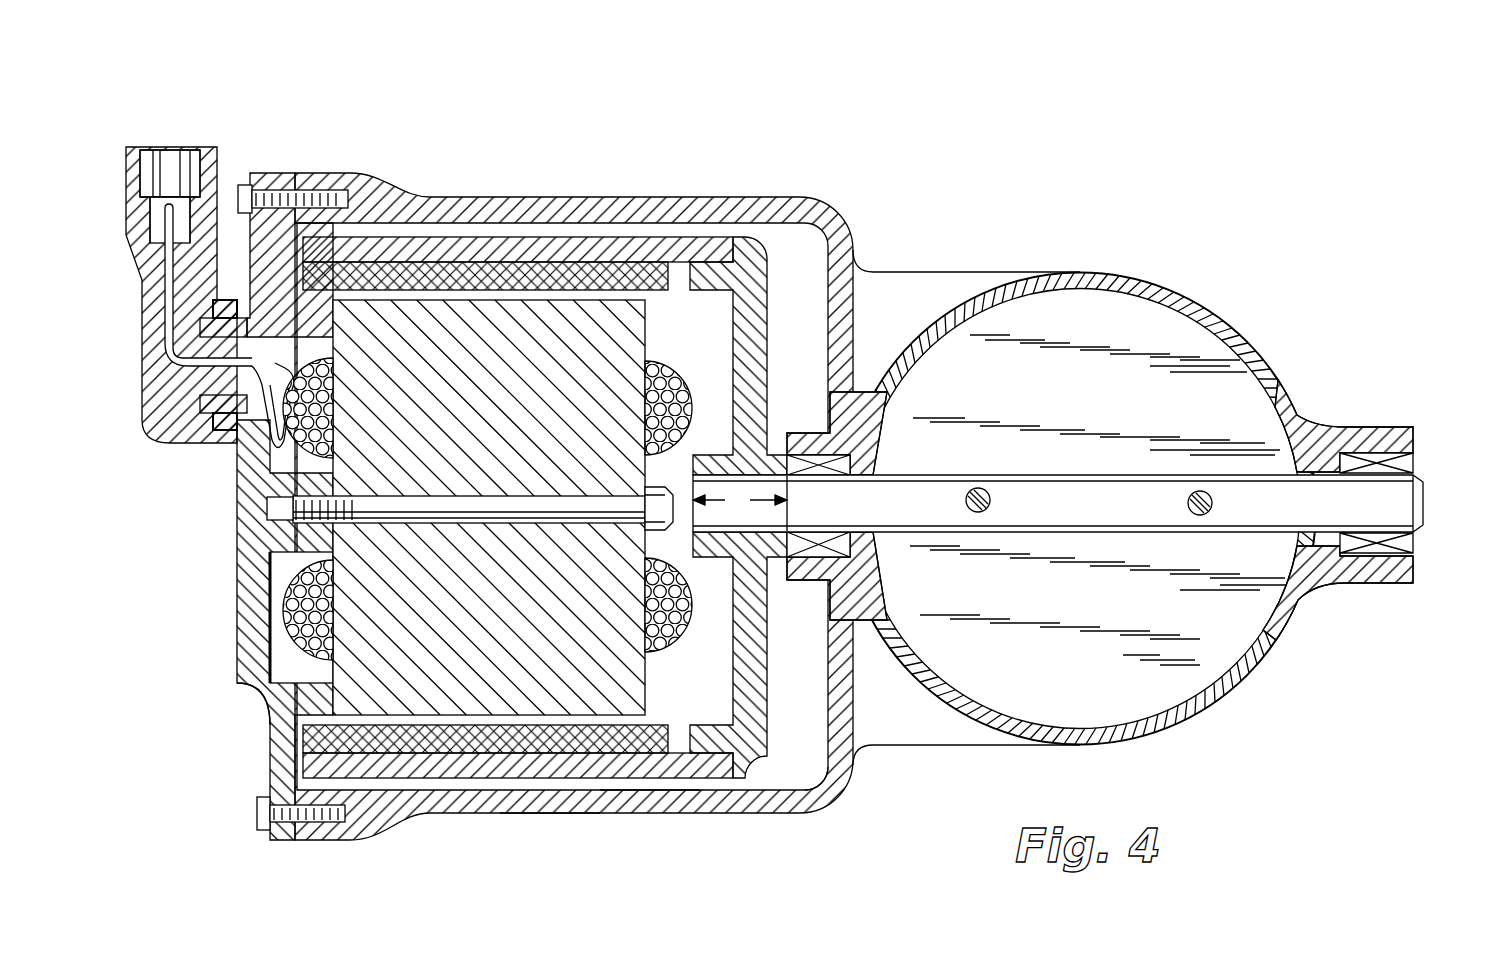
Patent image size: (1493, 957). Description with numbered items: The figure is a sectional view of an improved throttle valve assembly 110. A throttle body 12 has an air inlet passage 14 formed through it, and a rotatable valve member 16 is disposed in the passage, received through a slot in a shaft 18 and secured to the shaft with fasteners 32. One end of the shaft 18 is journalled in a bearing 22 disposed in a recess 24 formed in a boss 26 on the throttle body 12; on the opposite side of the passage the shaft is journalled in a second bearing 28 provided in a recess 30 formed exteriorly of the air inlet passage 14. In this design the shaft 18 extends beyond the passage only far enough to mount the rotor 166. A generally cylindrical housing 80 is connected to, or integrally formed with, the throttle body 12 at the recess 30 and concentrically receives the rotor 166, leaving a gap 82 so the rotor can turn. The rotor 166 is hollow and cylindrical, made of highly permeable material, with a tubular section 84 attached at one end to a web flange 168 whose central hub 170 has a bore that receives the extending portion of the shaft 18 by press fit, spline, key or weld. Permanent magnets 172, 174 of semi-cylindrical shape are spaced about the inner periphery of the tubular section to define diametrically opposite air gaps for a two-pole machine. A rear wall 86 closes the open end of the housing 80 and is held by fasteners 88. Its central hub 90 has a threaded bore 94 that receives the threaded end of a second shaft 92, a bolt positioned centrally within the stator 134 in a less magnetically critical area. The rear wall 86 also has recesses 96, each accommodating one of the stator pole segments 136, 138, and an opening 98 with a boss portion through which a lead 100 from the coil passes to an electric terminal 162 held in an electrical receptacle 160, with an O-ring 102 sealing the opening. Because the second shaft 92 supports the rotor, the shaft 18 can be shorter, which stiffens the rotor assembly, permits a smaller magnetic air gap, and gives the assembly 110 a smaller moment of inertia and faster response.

The throttle body 12 is at (1278, 362).
The air inlet passage 14 is at (1177, 306).
The valve member 16 is at (1076, 603).
The shaft 18 is at (1073, 477).
The bearing 22 is at (1415, 540).
The recess 24 is at (1414, 470).
The boss 26 is at (1390, 427).
The second bearing 28 is at (873, 548).
The recess 30 is at (878, 440).
The fasteners 32 is at (993, 490).
The housing 80 is at (697, 197).
The gap 82 is at (627, 790).
The tubular section 84 is at (545, 813).
The rear wall 86 is at (218, 488).
The fasteners 88 is at (246, 183).
The hub 90 is at (272, 585).
The second shaft 92 is at (391, 497).
The threaded bore 94 is at (298, 522).
The recess 96 is at (243, 708).
The opening 98 is at (171, 447).
The lead 100 is at (268, 390).
The O-ring 102 is at (228, 298).
The throttle valve assembly 110 is at (825, 175).
The stator 134 is at (680, 356).
The pole segment 136 is at (334, 458).
The pole segment 138 is at (662, 652).
The electrical receptacle 160 is at (214, 148).
The electric terminal 162 is at (161, 200).
The rotor 166 is at (782, 778).
The web flange 168 is at (768, 337).
The hub 170 is at (792, 575).
The permanent magnet 172 is at (569, 260).
The permanent magnet 174 is at (310, 738).